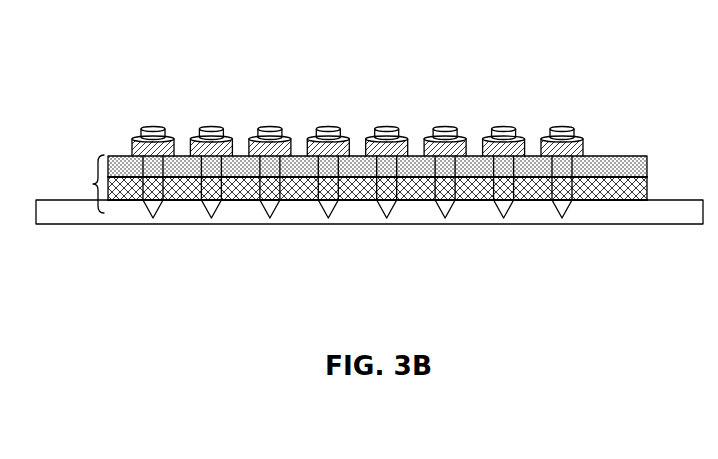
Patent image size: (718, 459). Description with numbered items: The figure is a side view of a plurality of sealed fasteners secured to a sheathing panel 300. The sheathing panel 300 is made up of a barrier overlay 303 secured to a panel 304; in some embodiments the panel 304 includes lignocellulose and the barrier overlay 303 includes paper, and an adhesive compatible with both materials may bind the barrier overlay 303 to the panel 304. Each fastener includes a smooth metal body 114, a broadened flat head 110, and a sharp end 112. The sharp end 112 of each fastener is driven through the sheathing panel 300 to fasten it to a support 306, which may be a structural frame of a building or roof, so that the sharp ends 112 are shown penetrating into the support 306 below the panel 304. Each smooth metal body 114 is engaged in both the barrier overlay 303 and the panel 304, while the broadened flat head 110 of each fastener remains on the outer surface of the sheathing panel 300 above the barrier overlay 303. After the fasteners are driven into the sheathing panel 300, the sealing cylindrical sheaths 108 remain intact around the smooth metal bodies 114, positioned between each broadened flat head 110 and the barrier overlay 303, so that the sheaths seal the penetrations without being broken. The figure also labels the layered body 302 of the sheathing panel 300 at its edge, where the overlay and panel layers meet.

The sheathing panel 300 is at (65, 135).
The substrate / layered body 302 is at (650, 179).
The barrier overlay 303 is at (605, 154).
The panel 304 is at (613, 193).
The support 306 is at (420, 212).
The sealing cylindrical sheaths 108 is at (255, 136).
The broadened flat head 110 is at (215, 123).
The sharp end 112 is at (150, 222).
The smooth metal body 114 is at (81, 184).